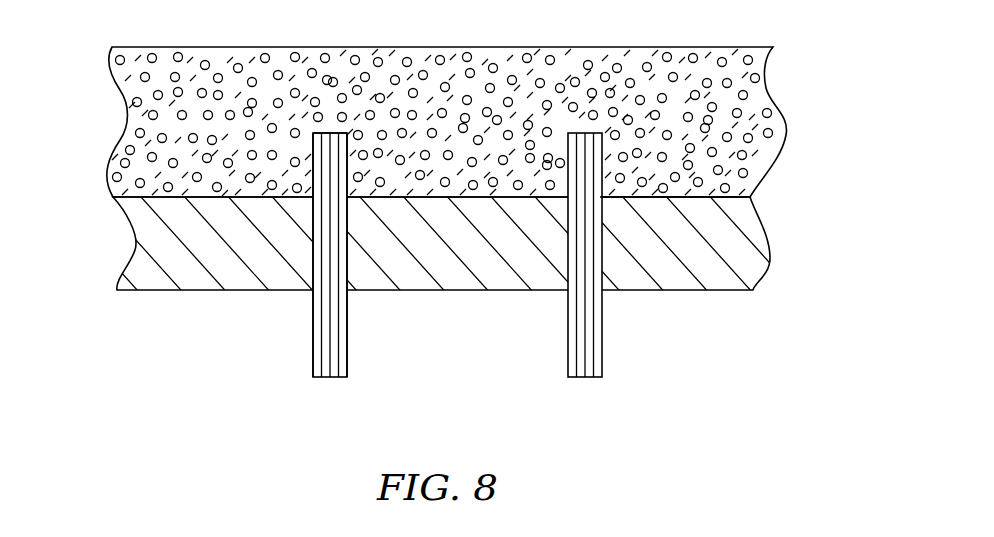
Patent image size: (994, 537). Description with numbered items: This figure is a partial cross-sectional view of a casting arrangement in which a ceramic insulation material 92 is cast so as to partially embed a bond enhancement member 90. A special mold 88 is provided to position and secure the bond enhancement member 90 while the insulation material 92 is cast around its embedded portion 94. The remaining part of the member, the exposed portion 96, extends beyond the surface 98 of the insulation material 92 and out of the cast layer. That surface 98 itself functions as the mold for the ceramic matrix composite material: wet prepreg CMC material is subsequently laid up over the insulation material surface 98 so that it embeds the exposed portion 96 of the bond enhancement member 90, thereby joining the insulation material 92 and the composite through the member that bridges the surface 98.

The mold 88 is at (762, 262).
The bond enhancement member 90 is at (347, 342).
The insulation material 92 is at (768, 83).
The embedded portion 94 is at (308, 150).
The exposed portion 96 is at (308, 342).
The surface 98 is at (696, 199).